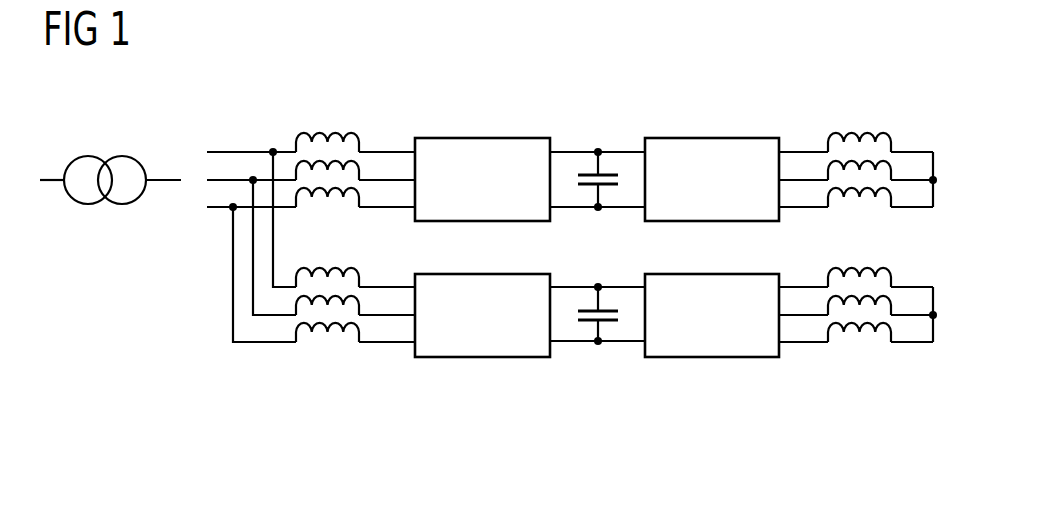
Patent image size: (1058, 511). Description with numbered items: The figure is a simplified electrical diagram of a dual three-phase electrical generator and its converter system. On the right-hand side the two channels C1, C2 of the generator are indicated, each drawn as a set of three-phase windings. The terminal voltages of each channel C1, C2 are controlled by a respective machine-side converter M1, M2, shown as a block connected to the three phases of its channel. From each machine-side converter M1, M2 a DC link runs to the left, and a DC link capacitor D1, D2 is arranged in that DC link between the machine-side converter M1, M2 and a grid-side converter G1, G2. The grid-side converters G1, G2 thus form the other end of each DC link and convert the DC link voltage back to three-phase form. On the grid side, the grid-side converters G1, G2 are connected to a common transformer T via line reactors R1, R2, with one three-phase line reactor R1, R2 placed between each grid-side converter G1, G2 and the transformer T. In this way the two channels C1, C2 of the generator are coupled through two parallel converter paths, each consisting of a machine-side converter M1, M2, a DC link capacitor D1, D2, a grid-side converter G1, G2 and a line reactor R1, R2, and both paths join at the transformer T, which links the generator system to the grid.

The transformer T is at (105, 160).
The line reactor R1 is at (328, 128).
The line reactor R2 is at (330, 347).
The grid-side converter G1 is at (482, 138).
The grid-side converter G2 is at (483, 357).
The DC link capacitor D1 is at (612, 170).
The DC link capacitor D2 is at (611, 323).
The machine-side converter M1 is at (712, 138).
The machine-side converter M2 is at (713, 357).
The channel C1 is at (870, 113).
The channel C2 is at (870, 355).